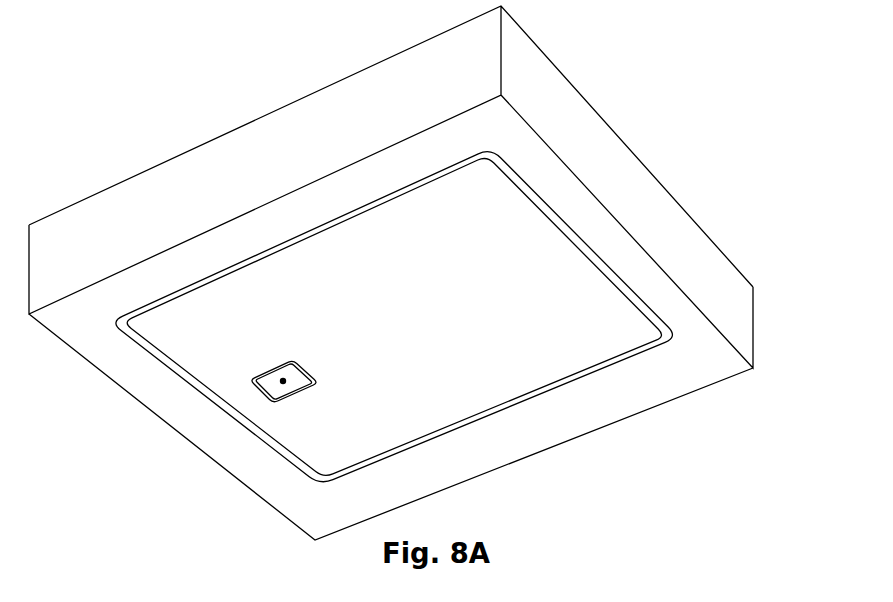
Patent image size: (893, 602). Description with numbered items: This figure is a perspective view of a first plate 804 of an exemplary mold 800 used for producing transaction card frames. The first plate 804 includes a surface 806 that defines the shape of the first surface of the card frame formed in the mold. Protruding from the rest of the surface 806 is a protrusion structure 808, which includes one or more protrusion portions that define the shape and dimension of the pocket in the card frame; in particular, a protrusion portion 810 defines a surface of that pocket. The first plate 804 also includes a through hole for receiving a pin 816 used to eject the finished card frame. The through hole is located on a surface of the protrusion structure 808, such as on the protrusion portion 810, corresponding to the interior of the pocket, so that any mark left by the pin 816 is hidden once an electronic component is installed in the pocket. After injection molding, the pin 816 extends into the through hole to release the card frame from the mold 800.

The mold 800 is at (107, 46).
The first plate 804 is at (650, 172).
The surface 806 is at (588, 300).
The protrusion structure 808 is at (275, 350).
The protrusion portion 810 is at (258, 383).
The pin 816 is at (280, 384).